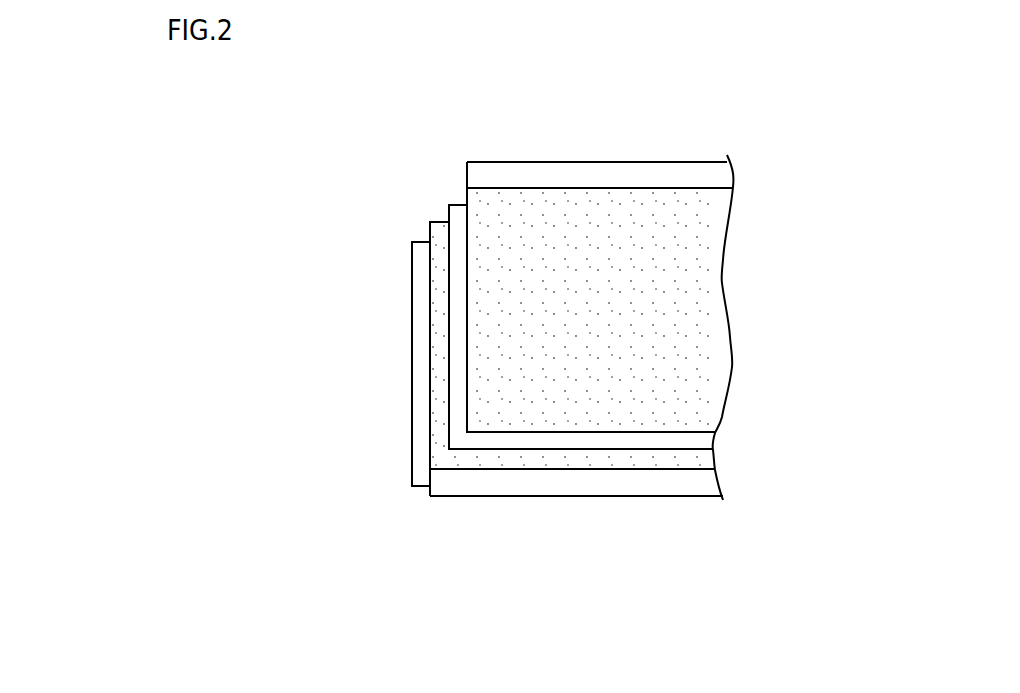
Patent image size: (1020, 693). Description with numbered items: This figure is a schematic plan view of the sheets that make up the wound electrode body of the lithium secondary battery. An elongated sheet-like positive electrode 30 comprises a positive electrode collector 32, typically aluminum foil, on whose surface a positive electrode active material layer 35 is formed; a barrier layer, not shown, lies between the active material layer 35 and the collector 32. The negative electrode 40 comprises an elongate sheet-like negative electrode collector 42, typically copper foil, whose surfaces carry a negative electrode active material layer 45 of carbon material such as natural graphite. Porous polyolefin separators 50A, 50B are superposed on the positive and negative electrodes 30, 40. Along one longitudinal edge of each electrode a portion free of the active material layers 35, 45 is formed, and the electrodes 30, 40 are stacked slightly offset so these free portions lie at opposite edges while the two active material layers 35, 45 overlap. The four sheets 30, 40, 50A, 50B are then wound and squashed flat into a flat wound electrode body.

The positive electrode 30 is at (600, 282).
The positive electrode collector 32 is at (698, 168).
The positive electrode active material layer 35 is at (512, 213).
The negative electrode 40 is at (576, 399).
The negative electrode collector 42 is at (492, 485).
The negative electrode active material layer 45 is at (645, 462).
The separator 50A is at (457, 197).
The separator 50B is at (420, 234).